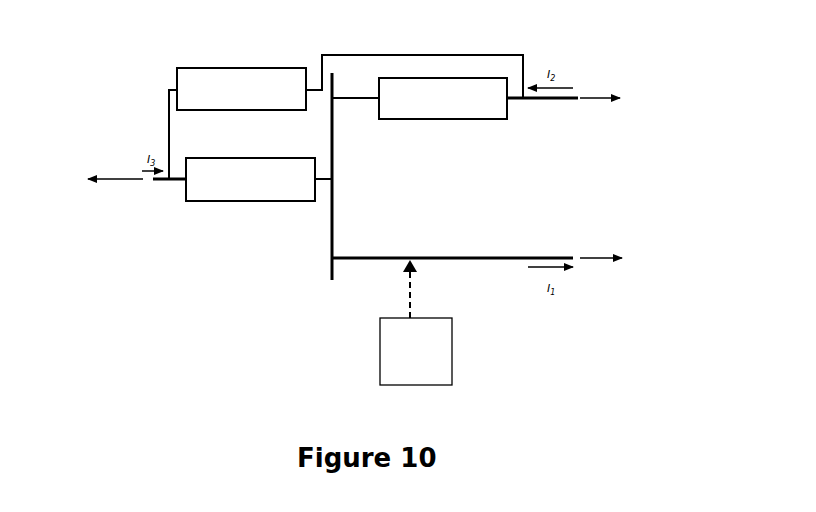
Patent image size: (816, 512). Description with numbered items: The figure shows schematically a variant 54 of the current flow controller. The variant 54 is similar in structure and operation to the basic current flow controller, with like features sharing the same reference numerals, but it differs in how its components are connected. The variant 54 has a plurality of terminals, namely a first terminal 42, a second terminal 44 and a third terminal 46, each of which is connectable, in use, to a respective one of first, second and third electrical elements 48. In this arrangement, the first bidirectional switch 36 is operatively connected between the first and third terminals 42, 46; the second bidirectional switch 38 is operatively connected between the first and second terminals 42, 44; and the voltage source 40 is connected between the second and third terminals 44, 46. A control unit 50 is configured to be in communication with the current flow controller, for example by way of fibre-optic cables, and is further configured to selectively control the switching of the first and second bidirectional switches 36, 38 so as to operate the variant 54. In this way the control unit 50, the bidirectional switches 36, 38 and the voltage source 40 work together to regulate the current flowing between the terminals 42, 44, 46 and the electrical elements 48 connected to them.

The first bidirectional switch 36 is at (250, 179).
The second bidirectional switch 38 is at (443, 98).
The voltage source 40 is at (241, 101).
The first terminal 42 is at (515, 247).
The second terminal 44 is at (525, 105).
The third terminal 46 is at (170, 185).
The electrical element 48 is at (356, 178).
The control unit 50 is at (416, 322).
The variant of the current flow controller 54 is at (308, 302).